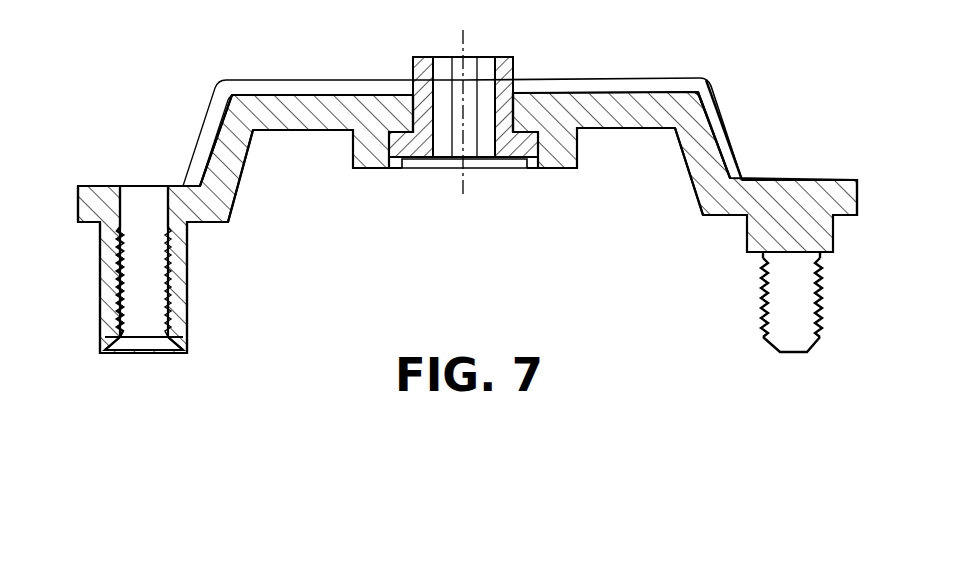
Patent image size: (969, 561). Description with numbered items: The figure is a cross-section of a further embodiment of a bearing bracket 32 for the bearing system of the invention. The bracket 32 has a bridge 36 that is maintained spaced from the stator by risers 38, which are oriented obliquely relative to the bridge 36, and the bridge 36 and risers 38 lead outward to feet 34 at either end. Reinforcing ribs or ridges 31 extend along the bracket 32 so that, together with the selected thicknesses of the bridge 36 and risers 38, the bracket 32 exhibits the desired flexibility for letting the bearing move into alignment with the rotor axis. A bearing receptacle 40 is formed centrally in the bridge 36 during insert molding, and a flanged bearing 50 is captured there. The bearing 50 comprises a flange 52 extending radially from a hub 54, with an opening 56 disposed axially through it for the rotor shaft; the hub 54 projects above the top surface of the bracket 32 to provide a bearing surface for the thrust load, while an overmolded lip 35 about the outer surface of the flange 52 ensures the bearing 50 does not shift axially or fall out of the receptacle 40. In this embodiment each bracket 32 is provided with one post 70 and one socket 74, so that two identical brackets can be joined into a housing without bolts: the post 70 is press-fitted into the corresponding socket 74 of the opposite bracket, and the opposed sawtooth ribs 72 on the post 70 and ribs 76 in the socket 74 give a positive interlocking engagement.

The ridges 31 is at (289, 80).
The bracket 32 is at (641, 70).
The feet 34 is at (95, 222).
The lip 35 is at (380, 165).
The bridge 36 is at (589, 118).
The risers 38 is at (237, 172).
The bearing receptacle 40 is at (410, 110).
The bearing 50 is at (502, 38).
The flange 52 is at (538, 157).
The hub 54 is at (507, 78).
The opening 56 is at (444, 80).
The post 70 is at (790, 273).
The ribs 72 is at (763, 320).
The socket 74 is at (185, 302).
The ribs 76 is at (172, 255).